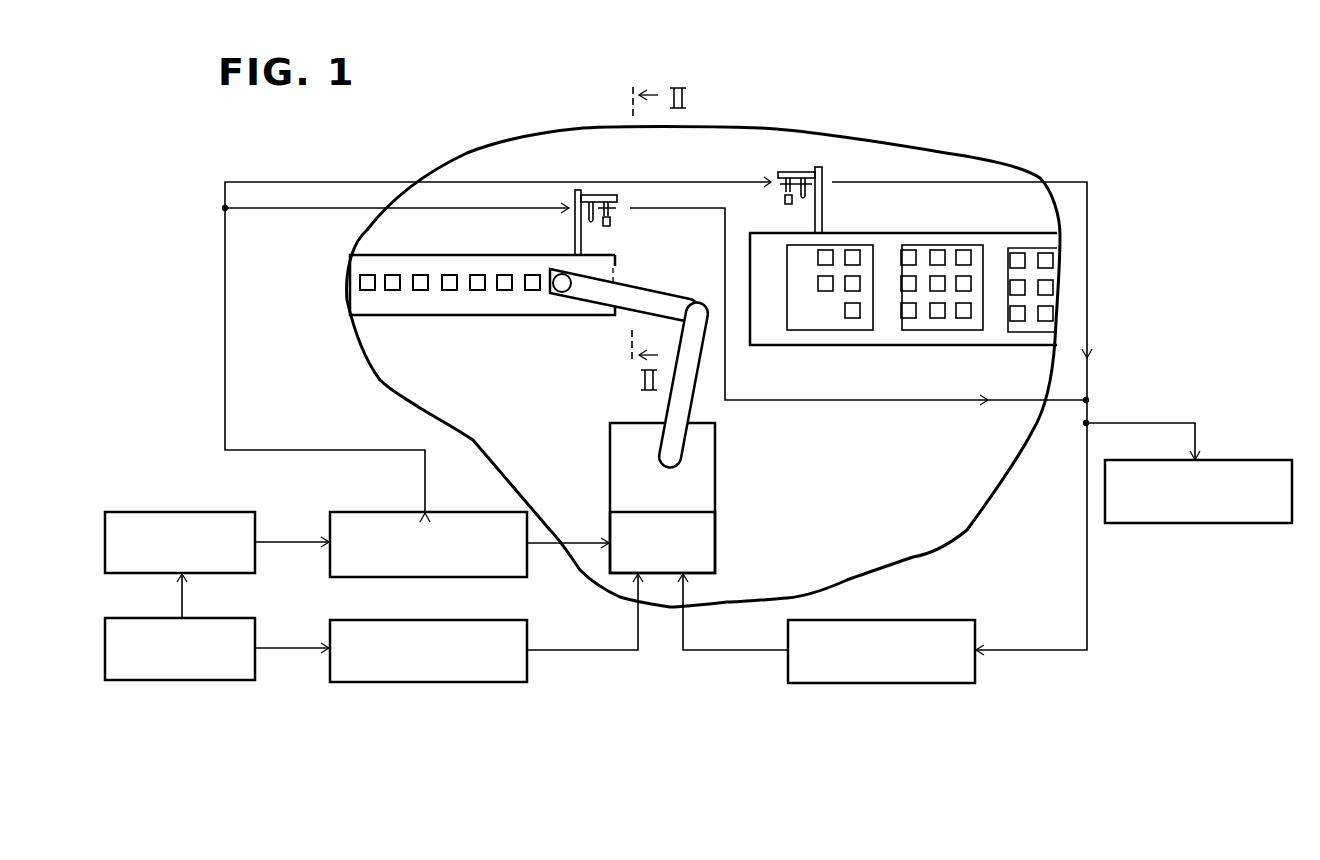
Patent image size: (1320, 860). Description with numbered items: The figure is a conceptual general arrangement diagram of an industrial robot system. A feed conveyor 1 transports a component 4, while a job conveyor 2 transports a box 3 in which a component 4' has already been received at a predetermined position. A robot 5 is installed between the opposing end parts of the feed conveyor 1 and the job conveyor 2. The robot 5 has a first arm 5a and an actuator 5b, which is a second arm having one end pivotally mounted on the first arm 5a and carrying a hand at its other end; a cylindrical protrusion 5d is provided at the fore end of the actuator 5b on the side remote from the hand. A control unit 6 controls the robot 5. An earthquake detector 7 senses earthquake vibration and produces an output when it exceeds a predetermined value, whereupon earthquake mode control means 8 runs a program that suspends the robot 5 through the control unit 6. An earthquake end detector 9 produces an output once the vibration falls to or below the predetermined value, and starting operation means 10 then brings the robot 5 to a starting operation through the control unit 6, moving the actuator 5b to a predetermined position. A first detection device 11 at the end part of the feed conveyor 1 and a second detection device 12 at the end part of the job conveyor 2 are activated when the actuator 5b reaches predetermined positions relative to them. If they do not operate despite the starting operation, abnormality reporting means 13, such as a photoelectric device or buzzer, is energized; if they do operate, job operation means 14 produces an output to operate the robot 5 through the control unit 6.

The feed conveyor 1 is at (410, 253).
The job conveyor 2 is at (920, 233).
The box 3 is at (968, 256).
The component 4 is at (450, 324).
The component 4' is at (877, 205).
The robot 5 is at (715, 473).
The first arm 5a is at (695, 395).
The actuator 5b is at (638, 285).
The cylindrical protrusion 5d is at (572, 290).
The control unit 6 is at (715, 537).
The earthquake detector 7 is at (158, 618).
The earthquake mode control means 8 is at (390, 620).
The earthquake end detector 9 is at (158, 512).
The starting operation means 10 is at (383, 512).
The first detection device 11 is at (578, 185).
The second detection device 12 is at (817, 165).
The abnormality reporting means 13 is at (1192, 523).
The job operation means 14 is at (880, 683).